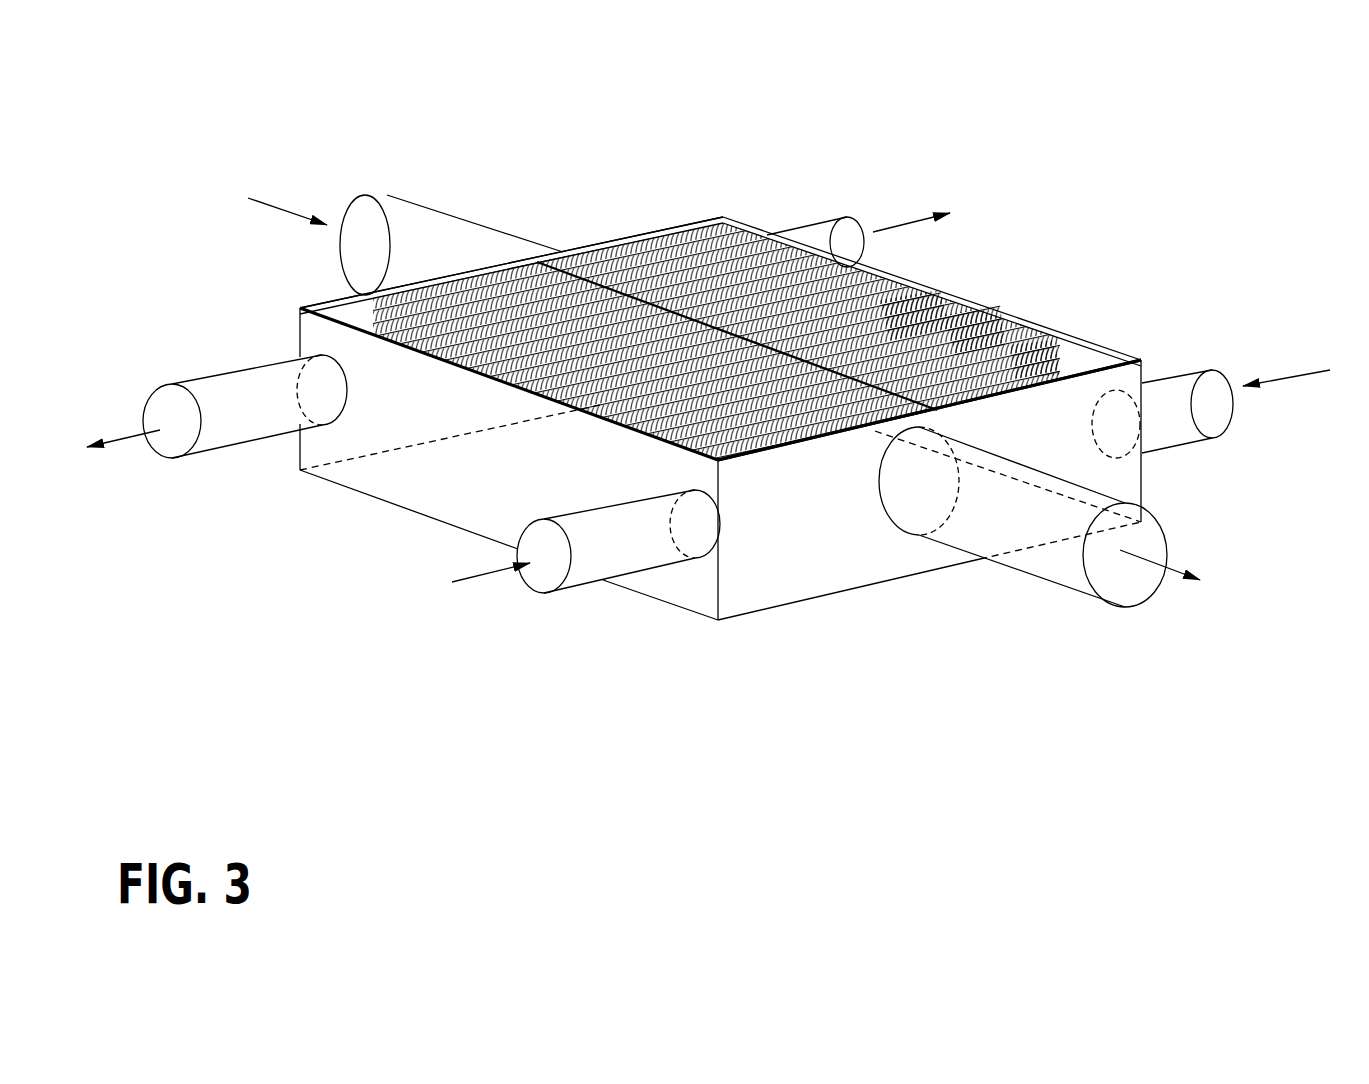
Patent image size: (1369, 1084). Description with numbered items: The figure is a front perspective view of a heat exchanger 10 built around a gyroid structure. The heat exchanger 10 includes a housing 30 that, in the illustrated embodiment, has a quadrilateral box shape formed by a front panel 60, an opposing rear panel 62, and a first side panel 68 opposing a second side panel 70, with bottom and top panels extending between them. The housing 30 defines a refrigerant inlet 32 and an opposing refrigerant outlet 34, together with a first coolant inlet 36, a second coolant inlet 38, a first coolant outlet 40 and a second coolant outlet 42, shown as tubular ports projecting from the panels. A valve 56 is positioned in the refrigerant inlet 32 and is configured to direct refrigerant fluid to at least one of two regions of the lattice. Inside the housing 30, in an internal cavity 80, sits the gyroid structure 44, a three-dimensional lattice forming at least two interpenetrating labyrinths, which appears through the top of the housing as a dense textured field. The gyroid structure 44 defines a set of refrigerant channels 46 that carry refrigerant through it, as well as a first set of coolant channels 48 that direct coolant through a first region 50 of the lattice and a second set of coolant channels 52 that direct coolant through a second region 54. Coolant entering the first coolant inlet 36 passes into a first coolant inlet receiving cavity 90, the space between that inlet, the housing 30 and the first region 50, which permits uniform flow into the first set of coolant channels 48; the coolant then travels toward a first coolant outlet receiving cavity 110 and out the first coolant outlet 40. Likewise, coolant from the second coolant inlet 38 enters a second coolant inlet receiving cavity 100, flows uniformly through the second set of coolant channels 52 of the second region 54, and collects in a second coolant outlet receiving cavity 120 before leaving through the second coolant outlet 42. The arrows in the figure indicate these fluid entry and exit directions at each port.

The heat exchanger 10 is at (565, 178).
The housing 30 is at (617, 240).
The refrigerant inlet 32 is at (425, 225).
The refrigerant outlet 34 is at (1068, 568).
The first coolant inlet 36 is at (588, 570).
The second coolant inlet 38 is at (1200, 420).
The first coolant outlet 40 is at (223, 425).
The second coolant outlet 42 is at (832, 237).
The gyroid structure 44 is at (970, 328).
The refrigerant channels 46 is at (797, 447).
The first set of coolant channels 48 is at (767, 447).
The first region 50 is at (500, 392).
The second set of coolant channels 52 is at (907, 318).
The second region 54 is at (1105, 360).
The valve 56 is at (962, 505).
The front panel 60 is at (568, 252).
The rear panel 62 is at (855, 573).
The first side panel 68 is at (470, 503).
The second side panel 70 is at (1035, 363).
The internal cavity 80 is at (657, 240).
The first coolant inlet receiving cavity 90 is at (725, 452).
The second coolant inlet receiving cavity 100 is at (1110, 350).
The first coolant outlet receiving cavity 110 is at (352, 313).
The second coolant outlet receiving cavity 120 is at (715, 233).